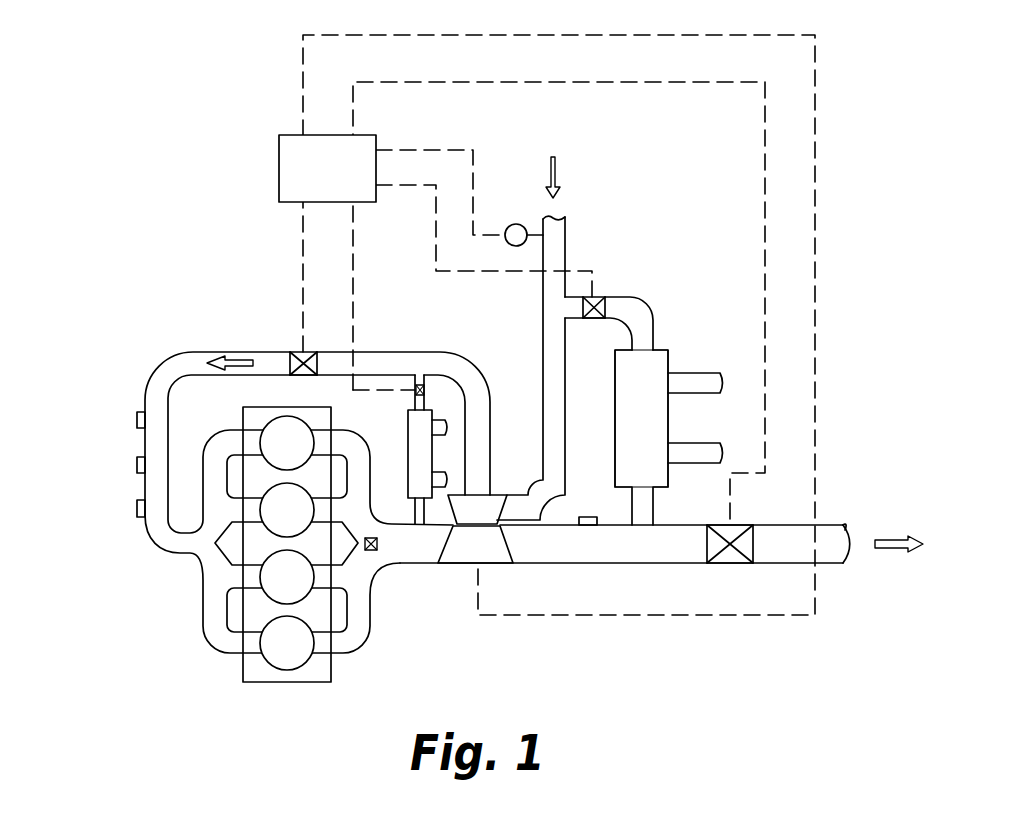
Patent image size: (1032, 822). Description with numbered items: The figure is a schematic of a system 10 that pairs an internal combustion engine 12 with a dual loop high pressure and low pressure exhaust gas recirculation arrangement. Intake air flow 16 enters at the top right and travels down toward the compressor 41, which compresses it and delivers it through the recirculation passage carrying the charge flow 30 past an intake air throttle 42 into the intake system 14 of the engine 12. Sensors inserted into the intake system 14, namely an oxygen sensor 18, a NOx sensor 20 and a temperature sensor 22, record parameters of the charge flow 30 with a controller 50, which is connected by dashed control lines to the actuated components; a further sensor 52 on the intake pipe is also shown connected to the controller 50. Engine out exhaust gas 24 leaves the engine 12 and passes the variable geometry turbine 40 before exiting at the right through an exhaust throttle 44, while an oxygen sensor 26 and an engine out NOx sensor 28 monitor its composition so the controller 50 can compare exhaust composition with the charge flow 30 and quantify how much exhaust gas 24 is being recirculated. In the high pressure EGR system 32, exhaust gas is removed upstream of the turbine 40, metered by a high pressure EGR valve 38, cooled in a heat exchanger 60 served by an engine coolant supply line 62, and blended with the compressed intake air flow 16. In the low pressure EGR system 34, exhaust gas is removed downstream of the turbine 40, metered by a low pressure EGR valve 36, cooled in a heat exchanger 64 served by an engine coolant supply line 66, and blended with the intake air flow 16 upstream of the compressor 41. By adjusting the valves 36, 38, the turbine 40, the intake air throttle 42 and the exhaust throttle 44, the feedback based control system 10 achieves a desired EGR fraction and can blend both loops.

The system 10 is at (855, 232).
The engine 12 is at (258, 682).
The intake system 14 is at (152, 527).
The intake air flow 16 is at (560, 170).
The oxygen sensor 18 is at (137, 420).
The NOx sensor 20 is at (137, 465).
The temperature sensor 22 is at (137, 507).
The engine out exhaust gas 24 is at (890, 540).
The oxygen sensor 26 is at (370, 552).
The engine out NOx sensor 28 is at (588, 517).
The charge flow 30 is at (232, 352).
The high pressure EGR system 32 is at (408, 450).
The low pressure EGR system 34 is at (658, 350).
The low pressure EGR valve 36 is at (598, 297).
The high pressure EGR valve 38 is at (422, 388).
The variable geometry turbine 40 is at (460, 565).
The compressor 41 is at (495, 495).
The intake air throttle 42 is at (297, 350).
The exhaust throttle 44 is at (733, 563).
The controller 50 is at (343, 181).
The sensor 52 is at (518, 224).
The heat exchanger 60 is at (407, 486).
The engine coolant supply line 62 is at (447, 420).
The heat exchanger 64 is at (630, 410).
The engine coolant supply line 66 is at (702, 373).